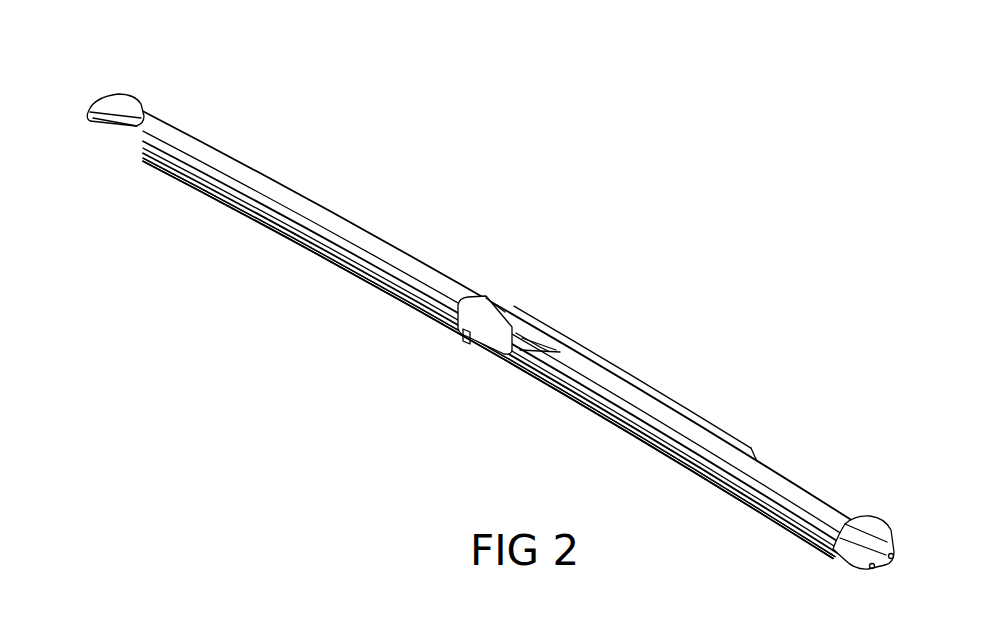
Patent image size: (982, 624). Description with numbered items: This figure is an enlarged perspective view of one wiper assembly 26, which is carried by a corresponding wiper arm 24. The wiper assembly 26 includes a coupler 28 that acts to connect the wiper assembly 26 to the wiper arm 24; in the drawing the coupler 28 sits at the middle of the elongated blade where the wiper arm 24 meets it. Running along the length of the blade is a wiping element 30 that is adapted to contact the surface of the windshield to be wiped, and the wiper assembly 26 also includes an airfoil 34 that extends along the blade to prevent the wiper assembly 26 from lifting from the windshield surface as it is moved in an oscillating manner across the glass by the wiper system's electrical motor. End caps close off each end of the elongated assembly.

The wiper assembly 26 is at (682, 308).
The wiper arm 24 is at (727, 410).
The coupler 28 is at (499, 295).
The wiping element 30 is at (742, 500).
The airfoil 34 is at (286, 185).